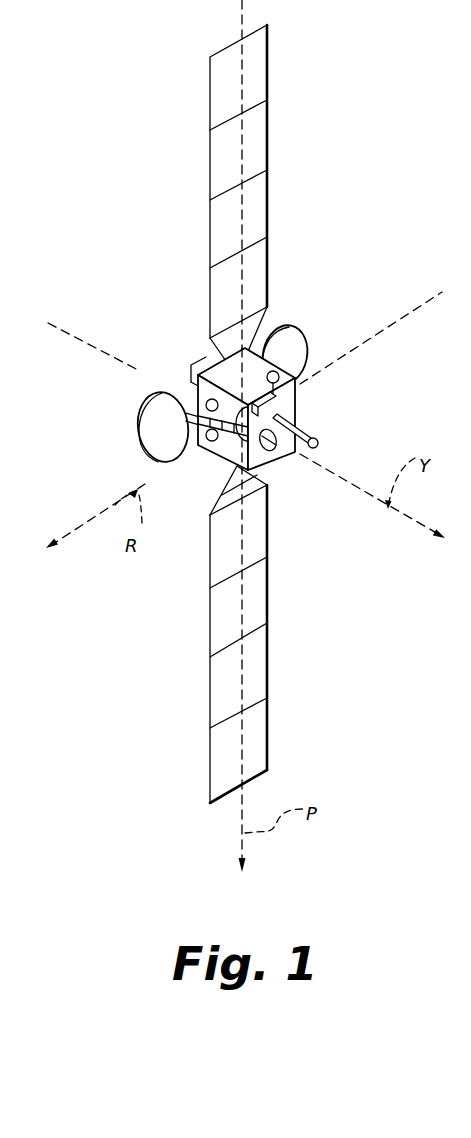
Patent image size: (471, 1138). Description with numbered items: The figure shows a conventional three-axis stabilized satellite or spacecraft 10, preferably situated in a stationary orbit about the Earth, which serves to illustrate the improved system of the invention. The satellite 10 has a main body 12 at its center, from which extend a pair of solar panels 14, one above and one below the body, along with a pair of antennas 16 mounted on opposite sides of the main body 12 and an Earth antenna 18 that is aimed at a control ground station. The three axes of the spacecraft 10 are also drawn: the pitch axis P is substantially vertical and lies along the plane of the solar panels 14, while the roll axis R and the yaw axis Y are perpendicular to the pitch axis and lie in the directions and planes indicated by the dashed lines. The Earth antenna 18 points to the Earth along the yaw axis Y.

The three-axis stabilized satellite 10 is at (140, 272).
The main body 12 is at (300, 395).
The solar panels 14 is at (260, 197).
The antennas 16 is at (157, 415).
The Earth antenna 18 is at (313, 438).